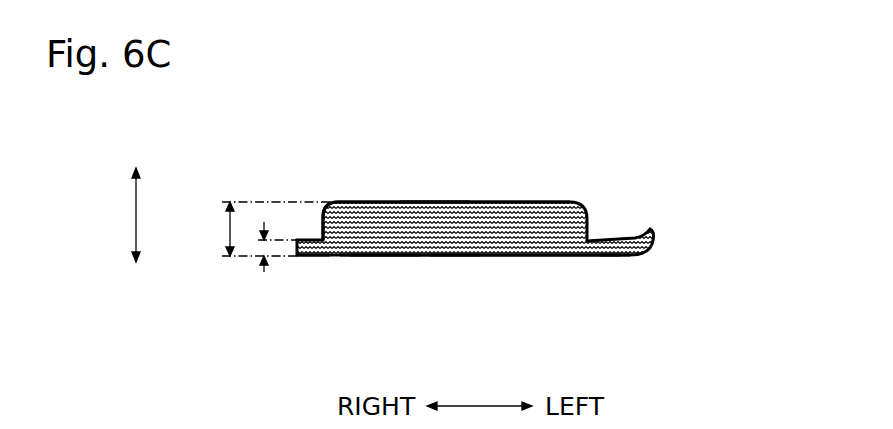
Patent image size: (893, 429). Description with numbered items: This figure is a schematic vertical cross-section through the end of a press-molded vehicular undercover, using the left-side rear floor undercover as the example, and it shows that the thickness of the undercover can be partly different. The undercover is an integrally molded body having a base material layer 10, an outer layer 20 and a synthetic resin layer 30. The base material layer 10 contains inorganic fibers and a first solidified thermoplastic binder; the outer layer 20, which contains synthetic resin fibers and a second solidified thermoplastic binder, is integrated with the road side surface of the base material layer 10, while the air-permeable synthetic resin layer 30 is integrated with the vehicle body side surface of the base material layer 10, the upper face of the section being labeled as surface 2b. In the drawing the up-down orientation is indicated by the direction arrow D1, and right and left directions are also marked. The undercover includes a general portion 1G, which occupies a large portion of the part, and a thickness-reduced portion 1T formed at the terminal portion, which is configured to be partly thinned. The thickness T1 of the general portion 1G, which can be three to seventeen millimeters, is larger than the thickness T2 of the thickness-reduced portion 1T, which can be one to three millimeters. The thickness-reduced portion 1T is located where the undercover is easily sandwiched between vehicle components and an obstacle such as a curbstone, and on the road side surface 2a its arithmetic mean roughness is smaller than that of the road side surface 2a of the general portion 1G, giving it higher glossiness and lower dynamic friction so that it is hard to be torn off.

The base material layer 10 is at (578, 226).
The synthetic resin layer 30 is at (530, 201).
The outer layer 20 is at (527, 257).
The top surface 2b is at (430, 201).
The road side surface 2a is at (380, 257).
The general portion 1G is at (455, 257).
The thickness-reduced portion 1T is at (313, 257).
The thickness of general portion T1 is at (268, 229).
The thickness of thickness-reduced portion T2 is at (264, 276).
The up-down direction D1 is at (133, 218).